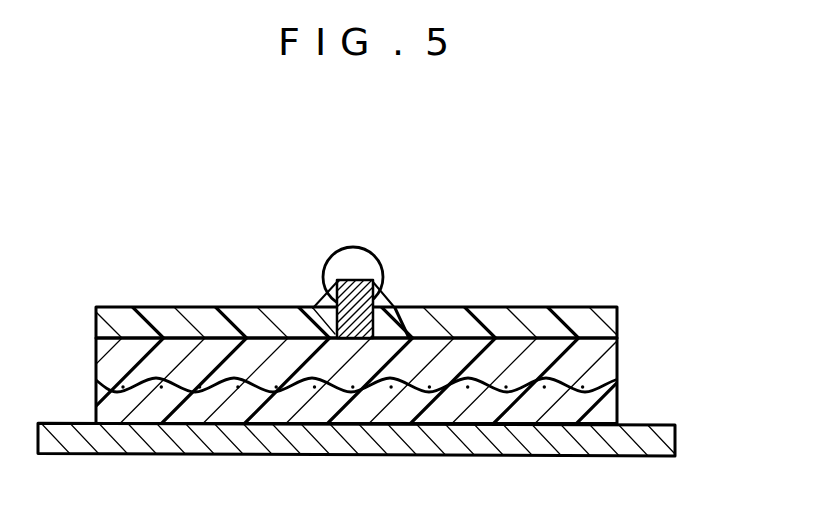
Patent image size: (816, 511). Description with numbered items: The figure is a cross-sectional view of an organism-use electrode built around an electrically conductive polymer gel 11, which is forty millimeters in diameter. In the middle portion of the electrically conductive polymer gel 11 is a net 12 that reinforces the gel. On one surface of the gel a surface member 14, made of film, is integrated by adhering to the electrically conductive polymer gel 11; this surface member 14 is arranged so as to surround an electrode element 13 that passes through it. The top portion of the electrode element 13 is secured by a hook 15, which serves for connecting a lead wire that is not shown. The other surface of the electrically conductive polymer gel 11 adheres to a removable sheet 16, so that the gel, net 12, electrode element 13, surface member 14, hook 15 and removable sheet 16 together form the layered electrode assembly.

The electrically conductive polymer gel 11 is at (603, 410).
The net 12 is at (585, 381).
The electrode element 13 is at (402, 317).
The surface member 14 is at (563, 322).
The hook 15 is at (362, 247).
The removable sheet 16 is at (675, 432).